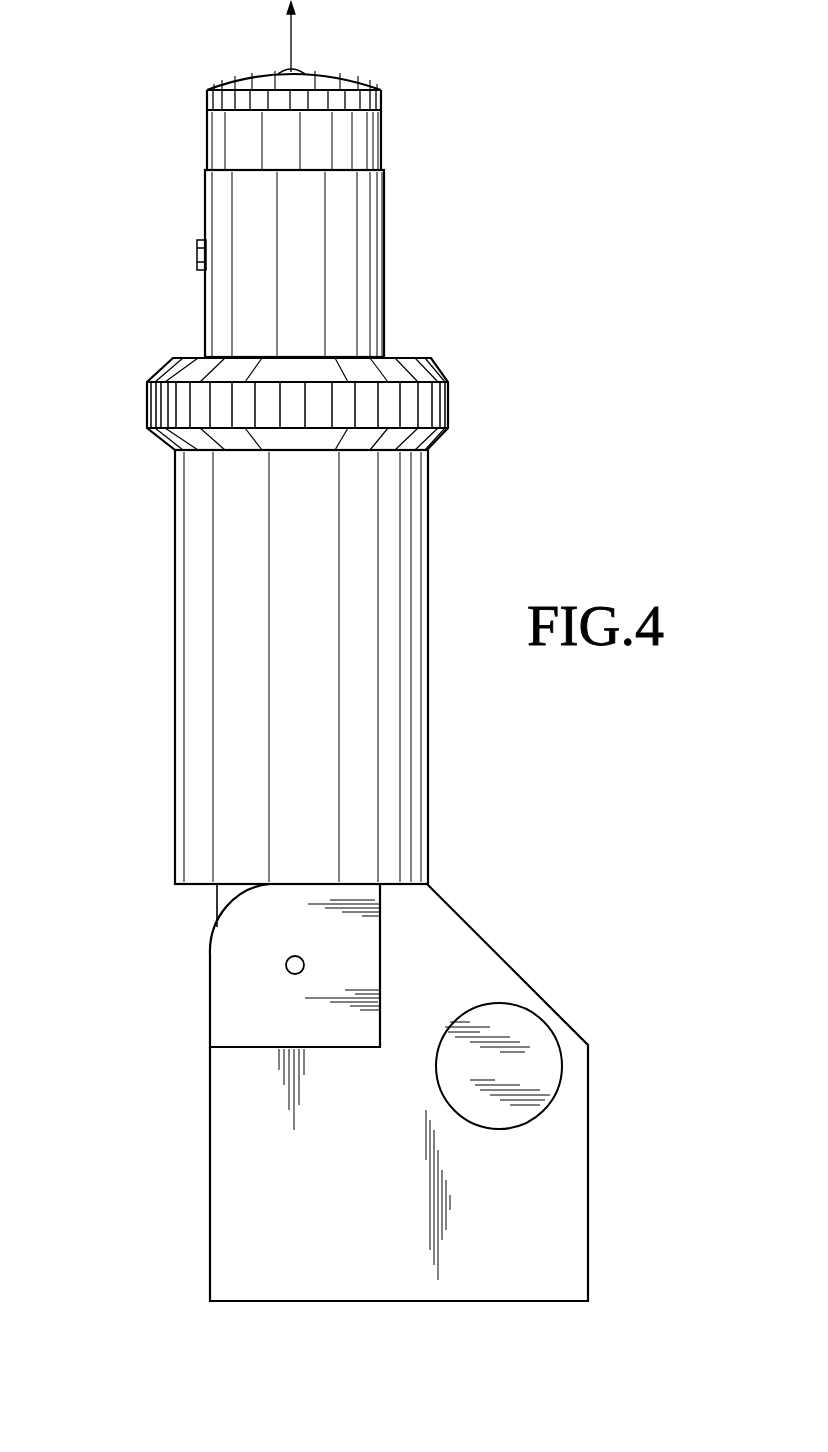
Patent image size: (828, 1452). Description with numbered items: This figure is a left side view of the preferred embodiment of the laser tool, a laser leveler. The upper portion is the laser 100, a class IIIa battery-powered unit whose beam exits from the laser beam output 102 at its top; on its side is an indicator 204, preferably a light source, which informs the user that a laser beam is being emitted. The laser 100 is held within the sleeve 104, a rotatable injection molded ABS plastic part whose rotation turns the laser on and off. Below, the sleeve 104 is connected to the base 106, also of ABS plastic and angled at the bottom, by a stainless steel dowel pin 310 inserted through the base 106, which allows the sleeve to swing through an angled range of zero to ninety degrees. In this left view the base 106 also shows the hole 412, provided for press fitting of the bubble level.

The laser 100 is at (386, 250).
The laser beam output 102 is at (297, 72).
The sleeve 104 is at (176, 563).
The base 106 is at (517, 973).
The indicator 204 is at (197, 253).
The dowel pin 310 is at (292, 975).
The hole 412 is at (560, 1085).